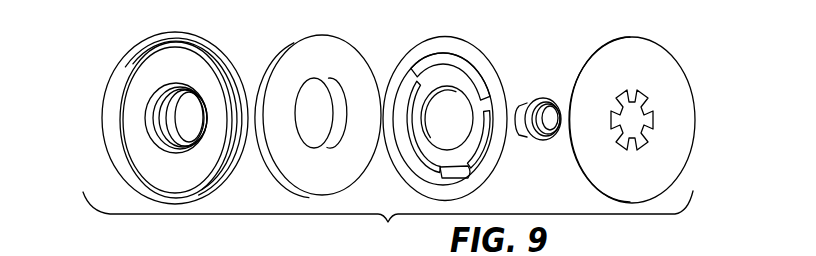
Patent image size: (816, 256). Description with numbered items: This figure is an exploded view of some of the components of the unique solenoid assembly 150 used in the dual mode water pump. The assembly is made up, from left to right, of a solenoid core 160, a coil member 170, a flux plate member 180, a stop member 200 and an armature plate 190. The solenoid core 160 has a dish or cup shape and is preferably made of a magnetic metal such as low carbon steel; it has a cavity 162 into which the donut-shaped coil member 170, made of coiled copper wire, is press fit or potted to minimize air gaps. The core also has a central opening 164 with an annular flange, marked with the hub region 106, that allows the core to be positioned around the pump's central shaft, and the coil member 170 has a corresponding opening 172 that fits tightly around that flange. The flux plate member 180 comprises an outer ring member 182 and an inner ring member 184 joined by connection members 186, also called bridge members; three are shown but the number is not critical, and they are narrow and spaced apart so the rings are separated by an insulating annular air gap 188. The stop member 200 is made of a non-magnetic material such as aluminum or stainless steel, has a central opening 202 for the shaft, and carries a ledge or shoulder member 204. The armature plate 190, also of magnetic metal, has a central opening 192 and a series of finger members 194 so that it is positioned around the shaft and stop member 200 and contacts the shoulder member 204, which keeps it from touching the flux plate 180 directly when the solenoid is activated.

The solenoid assembly 150 is at (388, 221).
The solenoid core 160 is at (128, 160).
The hub 106 is at (177, 86).
The cavity 162 is at (183, 105).
The central opening 164 is at (178, 116).
The coil member 170 is at (320, 47).
The opening 172 is at (322, 110).
The flux plate member 180 is at (465, 52).
The outer ring member 182 is at (483, 70).
The inner ring member 184 is at (468, 153).
The connection members 186 is at (415, 82).
The insulating annular air gap 188 is at (453, 177).
The armature plate 190 is at (645, 52).
The central opening 192 is at (632, 118).
The finger members 194 is at (632, 142).
The stop member 200 is at (540, 102).
The central opening 202 is at (548, 118).
The ledge or shoulder member 204 is at (547, 140).